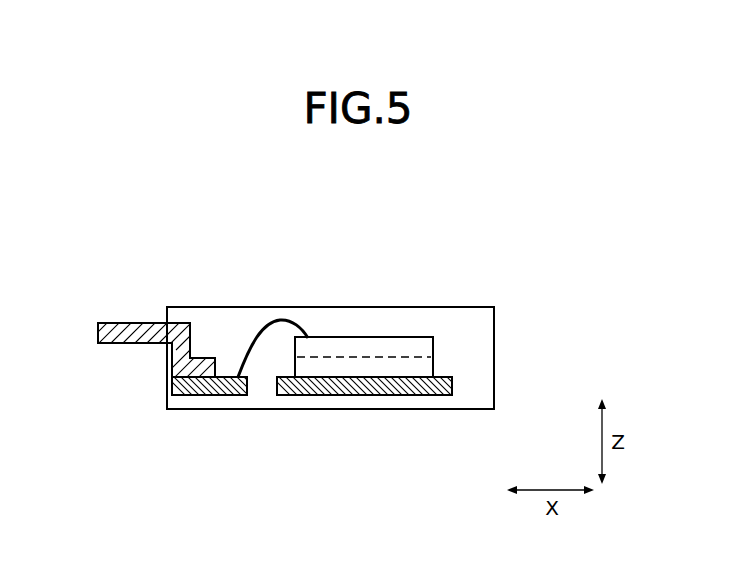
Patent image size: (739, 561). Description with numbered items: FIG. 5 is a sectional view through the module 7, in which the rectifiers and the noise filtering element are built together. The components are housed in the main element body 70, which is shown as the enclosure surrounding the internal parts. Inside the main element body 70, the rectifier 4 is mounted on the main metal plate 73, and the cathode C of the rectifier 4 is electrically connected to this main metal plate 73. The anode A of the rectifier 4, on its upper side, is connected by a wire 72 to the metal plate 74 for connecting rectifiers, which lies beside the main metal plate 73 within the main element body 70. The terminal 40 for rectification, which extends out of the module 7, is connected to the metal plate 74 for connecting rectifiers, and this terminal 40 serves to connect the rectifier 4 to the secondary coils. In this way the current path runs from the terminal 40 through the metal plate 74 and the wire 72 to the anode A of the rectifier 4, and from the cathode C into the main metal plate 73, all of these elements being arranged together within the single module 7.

The module 7 is at (502, 195).
The main element body 70 is at (388, 322).
The terminal for rectification 40 is at (147, 322).
The metal plate for connecting rectifiers 74 is at (208, 387).
The wire 72 is at (283, 320).
The main metal plate 73 is at (438, 390).
The rectifier 4 is at (410, 348).
The anode A is at (340, 337).
The cathode C is at (362, 377).